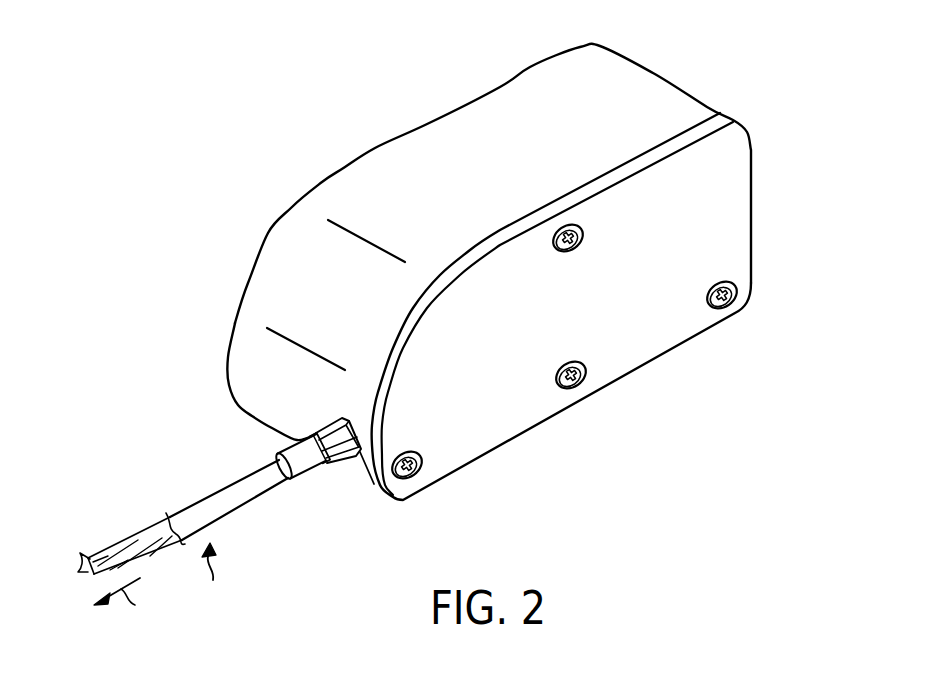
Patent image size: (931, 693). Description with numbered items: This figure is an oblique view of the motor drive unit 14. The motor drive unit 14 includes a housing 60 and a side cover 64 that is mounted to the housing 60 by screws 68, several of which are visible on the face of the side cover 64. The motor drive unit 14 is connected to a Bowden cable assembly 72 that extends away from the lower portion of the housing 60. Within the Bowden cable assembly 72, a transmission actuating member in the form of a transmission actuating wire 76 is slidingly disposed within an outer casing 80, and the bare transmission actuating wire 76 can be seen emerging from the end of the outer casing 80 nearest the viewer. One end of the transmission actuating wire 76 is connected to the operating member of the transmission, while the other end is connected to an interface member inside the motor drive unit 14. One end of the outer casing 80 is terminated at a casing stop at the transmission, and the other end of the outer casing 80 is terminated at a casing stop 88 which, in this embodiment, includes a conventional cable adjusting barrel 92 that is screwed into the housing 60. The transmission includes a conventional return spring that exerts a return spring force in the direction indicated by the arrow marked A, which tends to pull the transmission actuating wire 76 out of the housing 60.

The motor drive unit 14 is at (328, 100).
The housing 60 is at (508, 108).
The side cover 64 is at (730, 184).
The screws 68 is at (728, 306).
The Bowden cable assembly 72 is at (215, 573).
The transmission actuating wire 76 is at (126, 549).
The outer casing 80 is at (216, 498).
The casing stop 88 is at (304, 473).
The cable adjusting barrel 92 is at (344, 466).